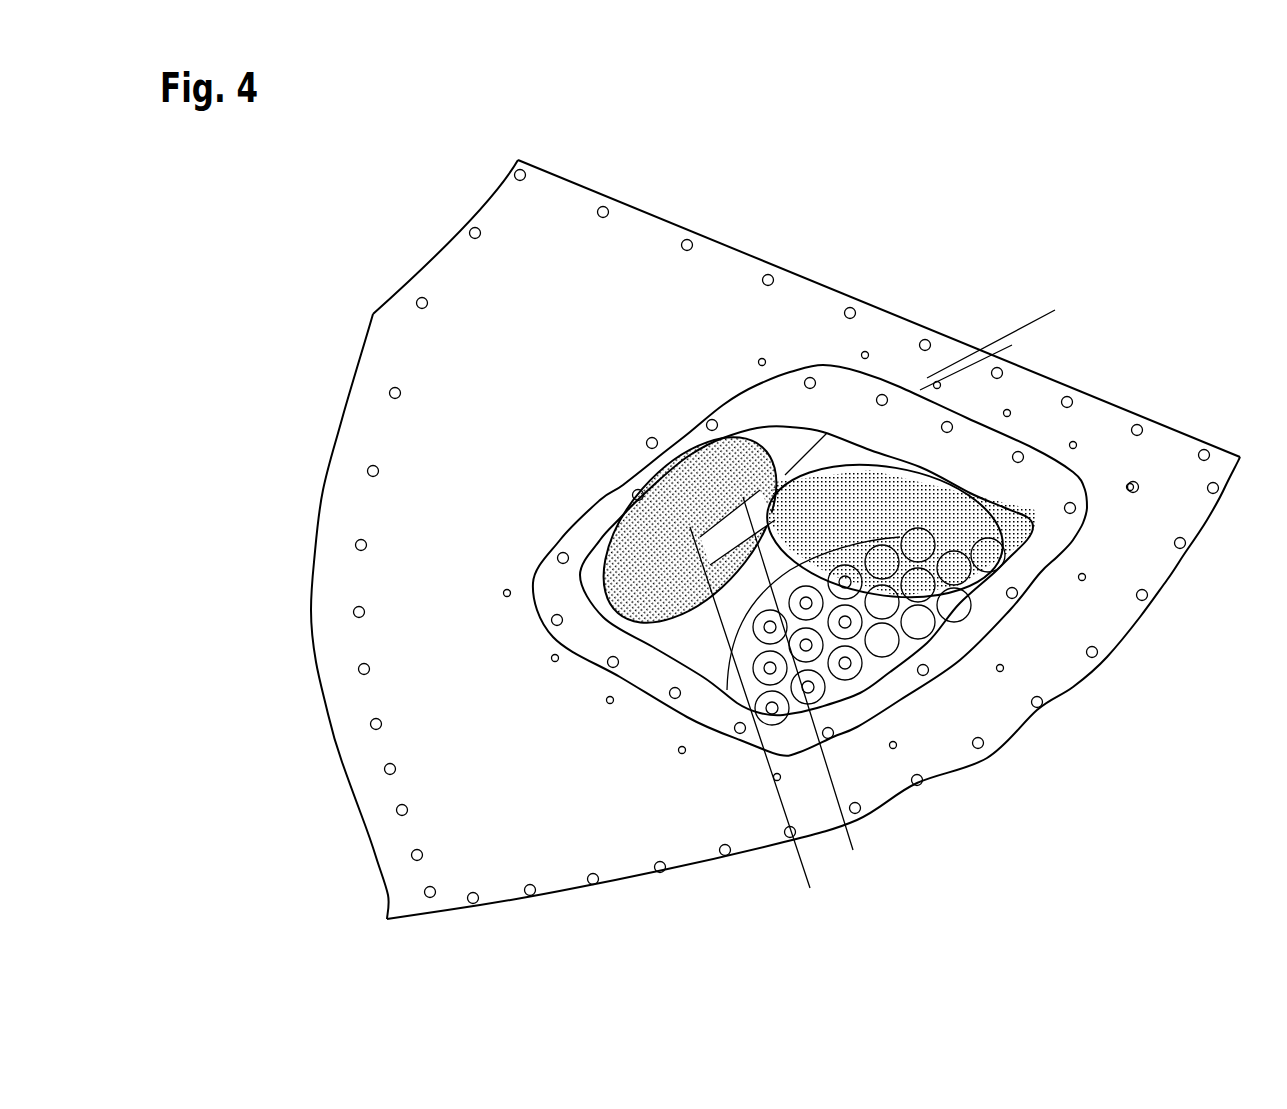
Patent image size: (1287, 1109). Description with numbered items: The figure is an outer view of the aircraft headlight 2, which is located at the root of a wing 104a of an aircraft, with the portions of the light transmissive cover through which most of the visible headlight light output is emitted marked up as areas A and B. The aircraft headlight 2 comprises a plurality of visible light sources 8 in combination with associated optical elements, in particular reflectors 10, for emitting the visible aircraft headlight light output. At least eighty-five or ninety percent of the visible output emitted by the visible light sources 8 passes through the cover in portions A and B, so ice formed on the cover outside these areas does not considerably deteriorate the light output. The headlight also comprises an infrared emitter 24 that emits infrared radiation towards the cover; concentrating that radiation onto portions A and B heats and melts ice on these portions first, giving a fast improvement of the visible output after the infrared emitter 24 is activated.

The wing 104a is at (728, 238).
The reflectors 10 is at (853, 733).
The aircraft headlight 2 is at (843, 415).
The infrared emitter 24 is at (774, 476).
The visible light sources 8 is at (757, 690).